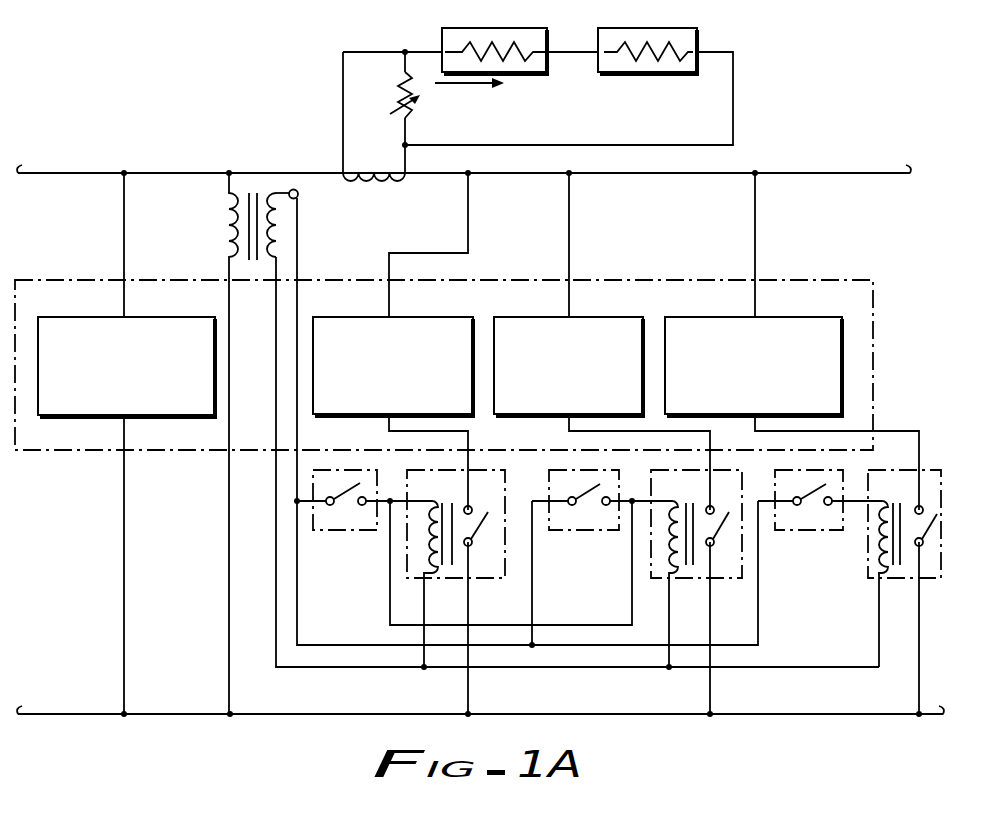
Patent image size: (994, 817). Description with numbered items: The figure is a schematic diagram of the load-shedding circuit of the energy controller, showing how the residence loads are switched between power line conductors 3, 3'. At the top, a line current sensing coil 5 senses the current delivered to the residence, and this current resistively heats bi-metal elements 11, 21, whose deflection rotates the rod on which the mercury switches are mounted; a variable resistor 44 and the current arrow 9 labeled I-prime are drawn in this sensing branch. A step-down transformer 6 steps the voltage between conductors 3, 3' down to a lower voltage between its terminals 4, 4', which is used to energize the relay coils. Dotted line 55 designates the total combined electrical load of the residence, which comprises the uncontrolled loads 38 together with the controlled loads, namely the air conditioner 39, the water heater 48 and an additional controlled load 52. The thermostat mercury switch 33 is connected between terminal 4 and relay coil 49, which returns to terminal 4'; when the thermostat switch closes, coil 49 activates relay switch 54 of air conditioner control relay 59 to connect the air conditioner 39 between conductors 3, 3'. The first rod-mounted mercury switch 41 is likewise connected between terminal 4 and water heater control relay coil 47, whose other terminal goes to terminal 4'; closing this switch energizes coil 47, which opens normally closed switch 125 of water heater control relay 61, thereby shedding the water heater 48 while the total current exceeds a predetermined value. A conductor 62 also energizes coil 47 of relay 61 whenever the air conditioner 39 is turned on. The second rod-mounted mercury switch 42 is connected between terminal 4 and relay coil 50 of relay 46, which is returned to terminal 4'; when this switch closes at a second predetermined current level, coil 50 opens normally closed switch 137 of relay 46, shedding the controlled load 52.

The power line conductor 3 is at (464, 155).
The power line conductor 3' is at (480, 697).
The bi-metal element 11 is at (516, 28).
The bi-metal element 21 is at (672, 28).
The variable resistor 44 is at (397, 98).
The current I' 9 is at (460, 87).
The line current sensing coil 5 is at (376, 183).
The step-down transformer 6 is at (237, 223).
The step-down transformer terminal 4 is at (512, 418).
The step-down transformer terminal 4' is at (577, 458).
The uncontrolled loads 38 is at (178, 317).
The air conditioner 39 is at (443, 317).
The water heater 48 is at (614, 317).
The controlled load 52 is at (806, 317).
The dotted line 55 is at (831, 280).
The mercury switch 33 is at (367, 530).
The relay switch 54 is at (479, 522).
The relay coil 49 is at (428, 576).
The air conditioner control relay 59 is at (488, 578).
The mercury switch 41 is at (598, 530).
The conductor 62 is at (598, 624).
The water heater control relay coil 47 is at (676, 576).
The water heater control relay 61 is at (726, 578).
The switch 125 is at (724, 526).
The mercury switch 42 is at (790, 531).
The relay coil 50 is at (884, 576).
The relay 46 is at (910, 535).
The normally closed switch 137 is at (922, 486).